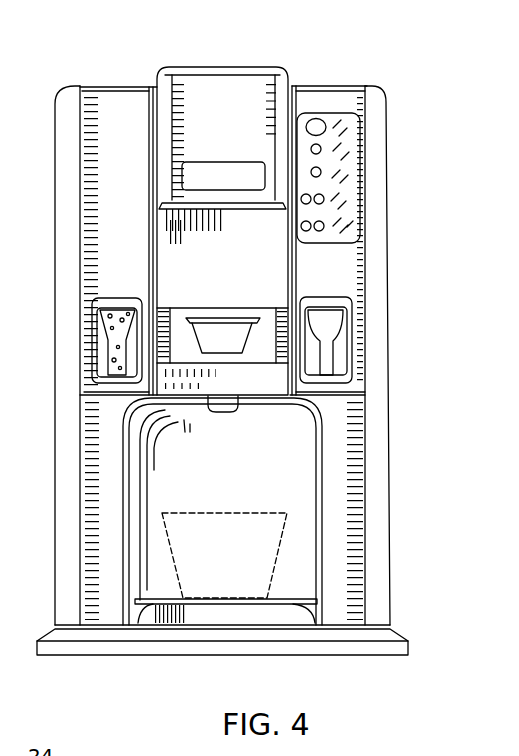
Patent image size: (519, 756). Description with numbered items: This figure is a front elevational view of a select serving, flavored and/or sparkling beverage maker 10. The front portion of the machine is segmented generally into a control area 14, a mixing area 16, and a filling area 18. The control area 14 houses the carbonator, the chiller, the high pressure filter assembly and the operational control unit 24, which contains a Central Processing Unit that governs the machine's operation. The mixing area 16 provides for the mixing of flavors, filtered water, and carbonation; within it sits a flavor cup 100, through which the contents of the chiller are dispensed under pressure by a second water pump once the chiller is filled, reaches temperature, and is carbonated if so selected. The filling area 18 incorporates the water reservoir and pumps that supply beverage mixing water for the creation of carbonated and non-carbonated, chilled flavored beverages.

The sparkling beverage maker 10 is at (386, 73).
The control area 14 is at (384, 373).
The mixing area 16 is at (144, 229).
The filling area 18 is at (58, 395).
The operational control unit 24 is at (340, 187).
The flavor cup 100 is at (203, 332).